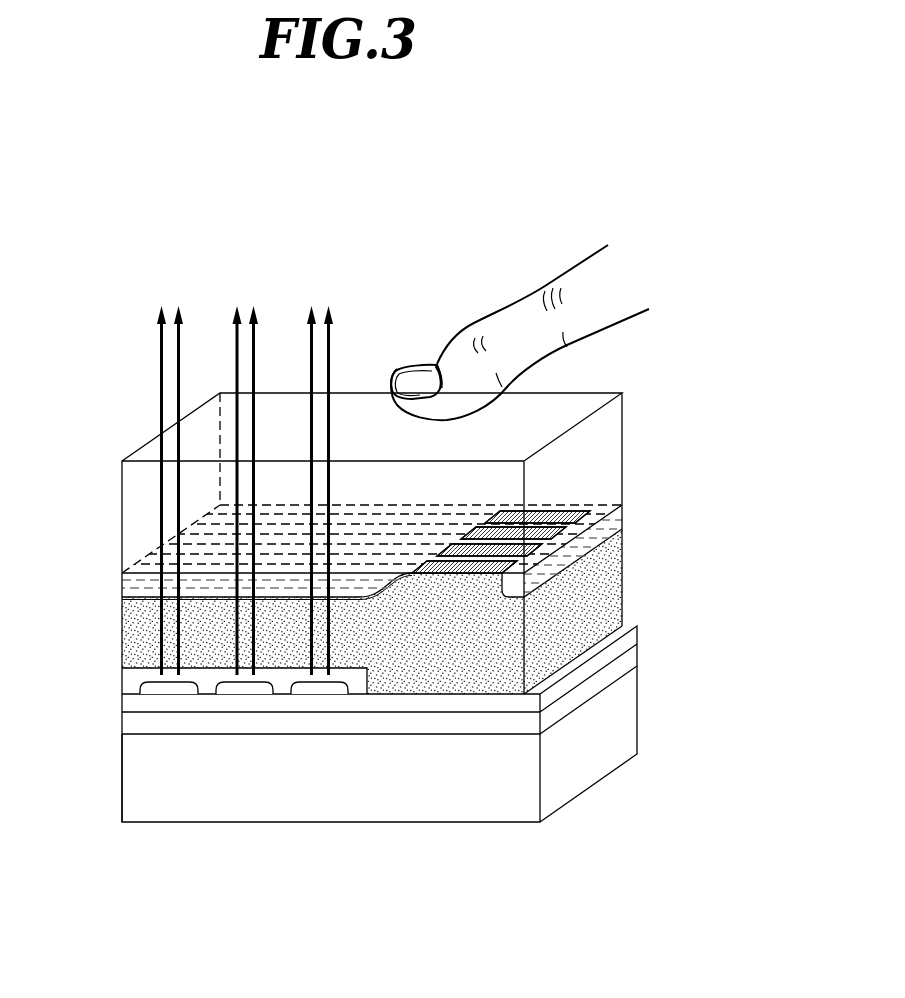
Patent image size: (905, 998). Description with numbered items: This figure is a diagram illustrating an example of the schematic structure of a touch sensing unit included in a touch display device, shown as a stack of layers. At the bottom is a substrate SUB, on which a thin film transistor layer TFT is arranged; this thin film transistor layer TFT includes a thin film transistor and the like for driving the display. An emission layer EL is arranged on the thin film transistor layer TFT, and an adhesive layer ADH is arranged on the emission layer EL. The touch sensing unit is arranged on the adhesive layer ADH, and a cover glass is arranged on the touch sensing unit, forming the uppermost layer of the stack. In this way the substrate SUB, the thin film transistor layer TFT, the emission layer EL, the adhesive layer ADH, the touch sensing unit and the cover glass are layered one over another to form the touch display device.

The adhesive layer ADH is at (133, 631).
The light emitting element layer EL is at (133, 681).
The thin film transistor layer TFT is at (112, 693).
The substrate SUB is at (133, 776).